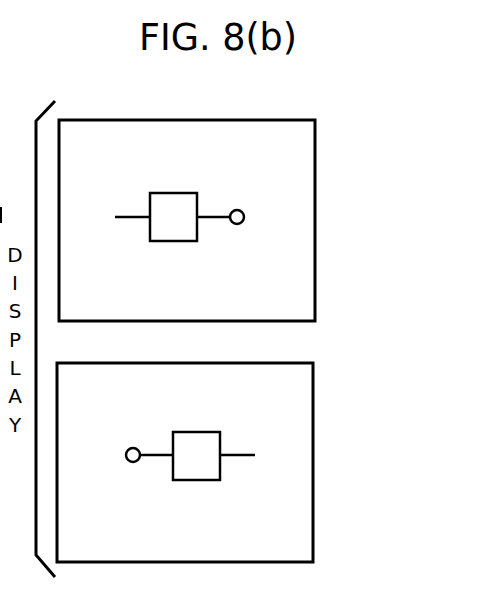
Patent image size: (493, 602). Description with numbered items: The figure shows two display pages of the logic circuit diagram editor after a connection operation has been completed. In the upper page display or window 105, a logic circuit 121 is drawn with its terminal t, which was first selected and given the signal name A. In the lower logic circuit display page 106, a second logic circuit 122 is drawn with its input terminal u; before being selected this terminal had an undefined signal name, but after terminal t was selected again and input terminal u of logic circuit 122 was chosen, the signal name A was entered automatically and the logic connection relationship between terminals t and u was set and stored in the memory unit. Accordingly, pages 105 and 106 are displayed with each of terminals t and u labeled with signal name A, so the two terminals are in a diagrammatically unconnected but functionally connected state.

The page display or window 105 is at (315, 190).
The logic circuit display page 106 is at (313, 457).
The logic circuit 121 is at (179, 212).
The logic circuit 122 is at (190, 462).